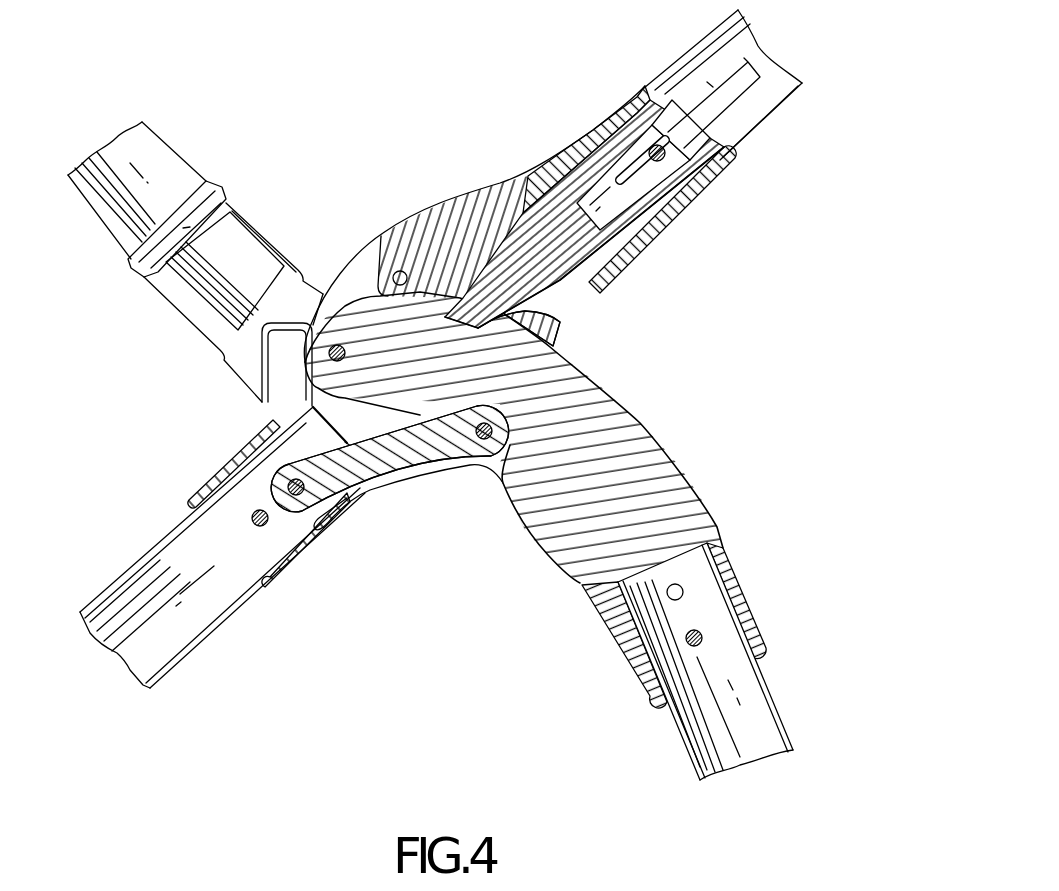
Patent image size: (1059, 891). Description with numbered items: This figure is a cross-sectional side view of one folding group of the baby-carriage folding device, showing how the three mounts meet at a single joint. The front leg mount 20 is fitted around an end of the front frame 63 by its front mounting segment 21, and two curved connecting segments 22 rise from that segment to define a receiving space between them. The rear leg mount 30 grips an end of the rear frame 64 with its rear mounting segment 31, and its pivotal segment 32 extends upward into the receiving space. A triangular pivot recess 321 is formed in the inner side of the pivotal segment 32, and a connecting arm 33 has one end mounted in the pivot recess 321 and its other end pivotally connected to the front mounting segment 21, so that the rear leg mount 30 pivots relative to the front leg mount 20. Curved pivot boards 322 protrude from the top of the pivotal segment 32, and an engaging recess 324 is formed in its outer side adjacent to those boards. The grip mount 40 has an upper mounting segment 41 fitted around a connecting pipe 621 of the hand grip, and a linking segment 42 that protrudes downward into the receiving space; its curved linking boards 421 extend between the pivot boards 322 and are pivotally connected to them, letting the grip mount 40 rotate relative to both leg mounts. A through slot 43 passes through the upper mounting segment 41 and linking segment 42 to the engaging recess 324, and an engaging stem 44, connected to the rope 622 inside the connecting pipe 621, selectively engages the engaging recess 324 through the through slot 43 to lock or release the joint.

The front leg mount 20 is at (333, 583).
The front mounting segment 21 is at (204, 463).
The connecting segment 22 is at (412, 487).
The rear leg mount 30 is at (697, 405).
The rear mounting segment 31 is at (761, 581).
The pivotal segment 32 is at (570, 563).
The pivot recess 321 is at (523, 477).
The pivot board 322 is at (355, 323).
The engaging recess 324 is at (557, 320).
The connecting arm 33 is at (370, 477).
The grip mount 40 is at (521, 113).
The upper mounting segment 41 is at (717, 200).
The linking segment 42 is at (436, 195).
The linking board 421 is at (360, 277).
The through slot 43 is at (516, 262).
The engaging stem 44 is at (633, 111).
The front frame 63 is at (226, 642).
The rear frame 64 is at (671, 745).
The connecting pipe 621 is at (713, 45).
The rope 622 is at (730, 87).